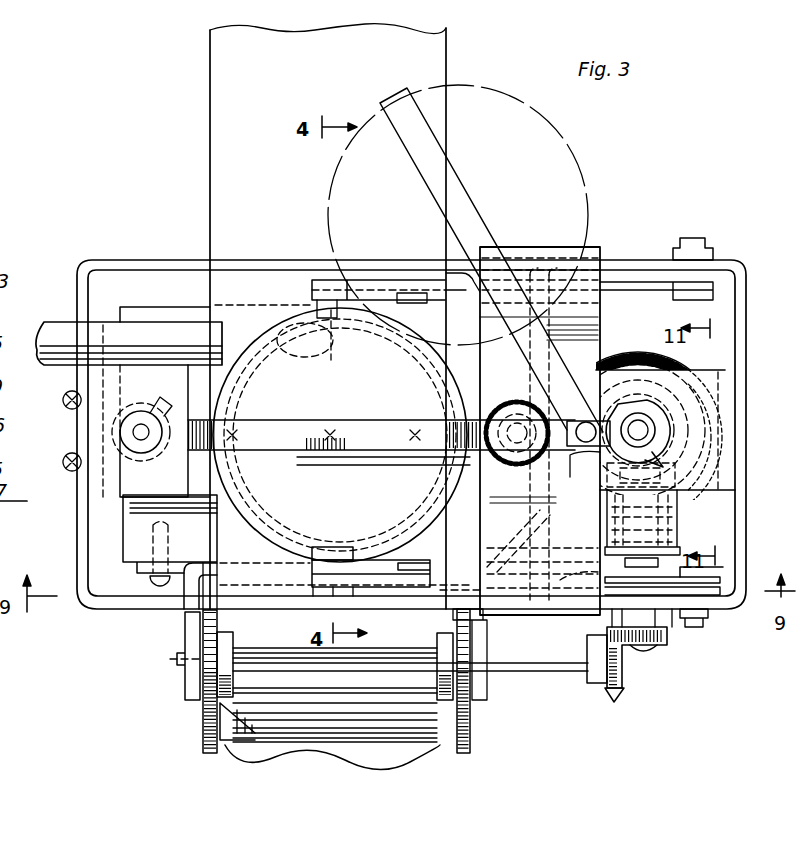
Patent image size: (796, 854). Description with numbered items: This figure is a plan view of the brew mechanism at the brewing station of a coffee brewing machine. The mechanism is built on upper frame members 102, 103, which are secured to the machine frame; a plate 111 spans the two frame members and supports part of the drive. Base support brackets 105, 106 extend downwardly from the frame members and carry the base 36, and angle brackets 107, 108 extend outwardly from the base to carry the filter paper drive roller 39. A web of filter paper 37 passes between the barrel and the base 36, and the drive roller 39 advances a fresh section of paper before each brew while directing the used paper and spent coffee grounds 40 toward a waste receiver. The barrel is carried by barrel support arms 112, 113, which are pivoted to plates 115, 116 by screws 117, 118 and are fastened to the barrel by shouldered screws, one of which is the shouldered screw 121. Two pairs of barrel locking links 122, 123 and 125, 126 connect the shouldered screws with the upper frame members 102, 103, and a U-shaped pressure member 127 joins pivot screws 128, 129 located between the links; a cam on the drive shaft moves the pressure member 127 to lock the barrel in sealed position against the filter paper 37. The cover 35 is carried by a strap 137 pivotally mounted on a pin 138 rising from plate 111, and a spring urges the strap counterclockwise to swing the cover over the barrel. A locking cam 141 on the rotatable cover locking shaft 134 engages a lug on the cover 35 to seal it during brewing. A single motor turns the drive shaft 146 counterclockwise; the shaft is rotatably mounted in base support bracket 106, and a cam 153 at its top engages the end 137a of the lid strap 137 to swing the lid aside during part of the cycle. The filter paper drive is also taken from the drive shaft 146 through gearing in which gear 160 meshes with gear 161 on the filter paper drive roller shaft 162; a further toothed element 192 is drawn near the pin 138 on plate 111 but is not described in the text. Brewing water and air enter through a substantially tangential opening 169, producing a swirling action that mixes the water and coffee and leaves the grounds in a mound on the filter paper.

The filter paper 37 is at (356, 63).
The cover 35 is at (583, 192).
The plate 111 is at (640, 277).
The barrel support arm 112 is at (660, 265).
The plate 115 is at (735, 264).
The screw 117 is at (713, 290).
The upper frame member 102 is at (747, 331).
The cam 153 is at (653, 400).
The base support bracket 106 is at (712, 378).
The drive shaft 146 is at (645, 430).
The upper frame member 103 is at (747, 473).
The screw 118 is at (708, 570).
The plate 116 is at (718, 606).
The barrel support arm 113 is at (672, 625).
The gear 160 is at (658, 650).
The gear 161 is at (618, 690).
The filter paper drive roller shaft 162 is at (568, 643).
The angle bracket 108 is at (487, 697).
The spent coffee grounds 40 is at (372, 758).
The filter paper drive roller 39 is at (200, 735).
The angle bracket 107 is at (185, 637).
The base support bracket 105 is at (112, 497).
The base 36 is at (128, 538).
The locking cam 141 is at (150, 462).
The cover locking shaft 134 is at (133, 432).
The strap 137 is at (279, 426).
The opening 169 is at (345, 365).
The pivot screw 128 is at (333, 326).
The barrel locking link 122 is at (370, 298).
The barrel locking link 123 is at (348, 297).
The shouldered screw 121 is at (335, 553).
The barrel locking link 125 is at (382, 573).
The barrel locking link 126 is at (345, 592).
The pivot screw 129 is at (442, 547).
The pressure member 127 is at (556, 515).
The end of lid strap 137a is at (605, 472).
The pinion 192 is at (497, 398).
The pin 138 is at (590, 420).